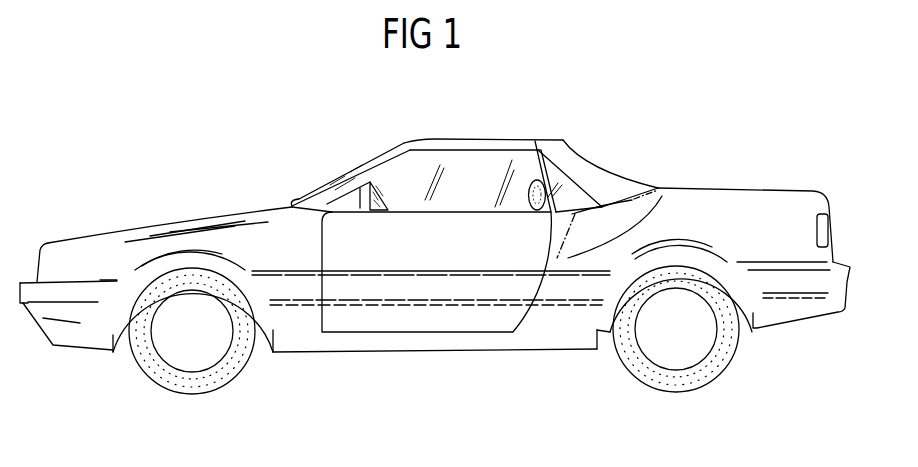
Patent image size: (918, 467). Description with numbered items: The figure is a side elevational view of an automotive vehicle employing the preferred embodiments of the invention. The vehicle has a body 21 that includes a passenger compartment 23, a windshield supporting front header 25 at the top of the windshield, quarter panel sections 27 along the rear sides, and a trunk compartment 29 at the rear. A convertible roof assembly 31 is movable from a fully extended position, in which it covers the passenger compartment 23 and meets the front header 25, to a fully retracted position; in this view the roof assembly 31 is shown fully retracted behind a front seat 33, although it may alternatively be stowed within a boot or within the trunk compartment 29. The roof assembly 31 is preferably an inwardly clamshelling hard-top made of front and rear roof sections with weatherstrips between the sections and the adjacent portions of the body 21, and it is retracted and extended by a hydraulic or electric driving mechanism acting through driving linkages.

The body 21 is at (438, 358).
The passenger compartment 23 is at (463, 185).
The windshield supporting front header 25 is at (408, 135).
The quarter panel sections 27 is at (605, 258).
The trunk compartment 29 is at (773, 208).
The convertible roof assembly 31 is at (560, 140).
The front seat 33 is at (530, 186).